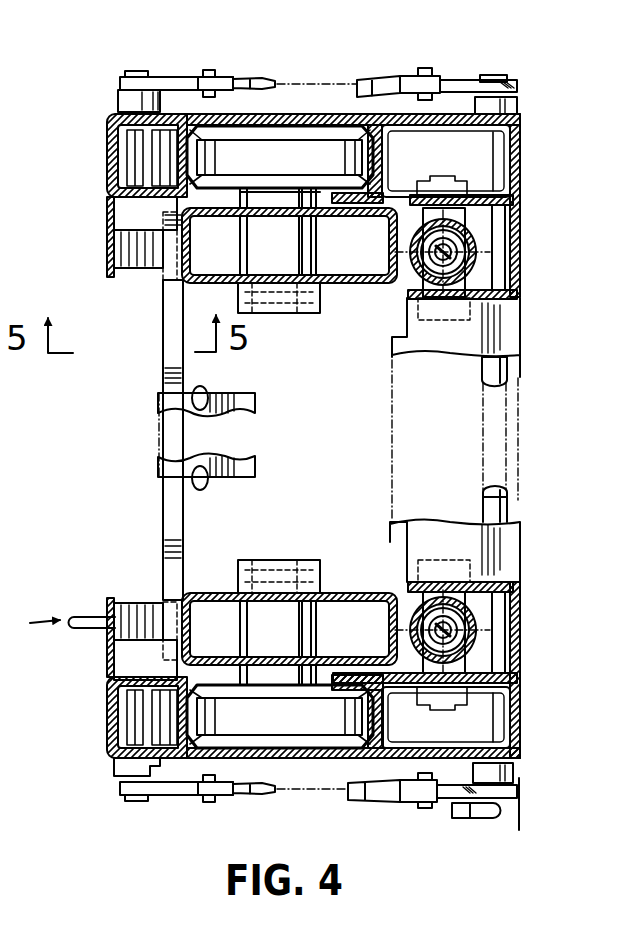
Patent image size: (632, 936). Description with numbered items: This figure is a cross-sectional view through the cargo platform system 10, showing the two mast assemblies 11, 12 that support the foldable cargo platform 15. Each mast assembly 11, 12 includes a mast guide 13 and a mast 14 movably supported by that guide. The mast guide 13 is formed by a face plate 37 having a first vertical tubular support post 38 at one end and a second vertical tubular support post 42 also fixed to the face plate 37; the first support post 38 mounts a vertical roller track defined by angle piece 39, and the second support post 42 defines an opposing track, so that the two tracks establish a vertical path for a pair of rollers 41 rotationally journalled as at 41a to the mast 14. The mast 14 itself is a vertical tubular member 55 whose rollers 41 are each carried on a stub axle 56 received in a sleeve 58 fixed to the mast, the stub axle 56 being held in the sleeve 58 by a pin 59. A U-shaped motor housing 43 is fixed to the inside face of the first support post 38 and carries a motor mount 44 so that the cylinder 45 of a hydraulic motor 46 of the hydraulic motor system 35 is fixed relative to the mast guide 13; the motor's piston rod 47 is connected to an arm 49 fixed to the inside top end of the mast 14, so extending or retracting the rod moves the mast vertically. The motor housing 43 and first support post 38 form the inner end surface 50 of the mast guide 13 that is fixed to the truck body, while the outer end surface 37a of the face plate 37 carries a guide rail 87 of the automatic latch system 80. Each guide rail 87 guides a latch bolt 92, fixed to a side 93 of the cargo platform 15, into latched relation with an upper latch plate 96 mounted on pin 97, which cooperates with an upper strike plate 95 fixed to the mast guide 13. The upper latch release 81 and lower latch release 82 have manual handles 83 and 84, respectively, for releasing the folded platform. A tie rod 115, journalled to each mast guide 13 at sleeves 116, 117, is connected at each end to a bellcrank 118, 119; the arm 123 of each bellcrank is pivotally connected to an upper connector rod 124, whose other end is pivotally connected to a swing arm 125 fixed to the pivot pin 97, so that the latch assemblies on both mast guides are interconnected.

The cargo platform system 10 is at (125, 446).
The mast assembly 11 is at (75, 181).
The mast assembly 12 is at (82, 727).
The mast guide 13 is at (455, 114).
The mast 14 is at (205, 283).
The foldable cargo platform 15 is at (238, 400).
The hydraulic motor system 35 is at (408, 285).
The face plate 37 is at (315, 114).
The outer end surface 37a is at (107, 215).
The first vertical tubular support post 38 is at (520, 165).
The angle piece 39 is at (385, 156).
The rollers 41 is at (286, 168).
The roller journal 41a is at (317, 272).
The second vertical tubular support post 42 is at (107, 150).
The motor housing 43 is at (520, 212).
The motor mount 44 is at (465, 222).
The cylinder 45 is at (470, 265).
The hydraulic motor 46 is at (418, 280).
The piston rod 47 is at (440, 302).
The arm 49 is at (398, 272).
The inner end surface 50 is at (520, 126).
The vertical tubular member 55 is at (217, 195).
The stub axle 56 is at (240, 251).
The sleeve 58 is at (285, 257).
The pin 59 is at (302, 315).
The automatic latch system 80 is at (122, 292).
The upper latch release 81 is at (40, 620).
The lower latch release 82 is at (483, 845).
The manual handle 83 is at (75, 627).
The manual handle 84 is at (462, 820).
The guide rail 87 is at (107, 277).
The latch bolt 92 is at (172, 348).
The side 93 is at (197, 408).
The upper strike plate 95 is at (135, 212).
The upper latch plate 96 is at (118, 250).
The pin 97 is at (140, 71).
The tie rod 115 is at (475, 363).
The sleeve 116 is at (518, 92).
The sleeve 117 is at (539, 817).
The bellcrank 118 is at (482, 75).
The bellcrank 119 is at (440, 805).
The bellcrank arm 123 is at (440, 110).
The upper connector rod 124 is at (265, 80).
The swing arm 125 is at (180, 90).